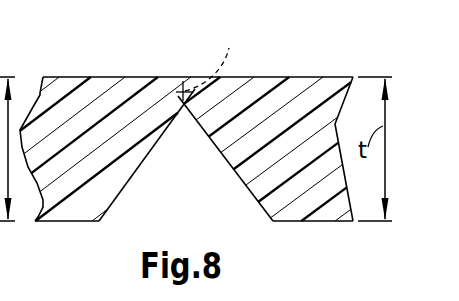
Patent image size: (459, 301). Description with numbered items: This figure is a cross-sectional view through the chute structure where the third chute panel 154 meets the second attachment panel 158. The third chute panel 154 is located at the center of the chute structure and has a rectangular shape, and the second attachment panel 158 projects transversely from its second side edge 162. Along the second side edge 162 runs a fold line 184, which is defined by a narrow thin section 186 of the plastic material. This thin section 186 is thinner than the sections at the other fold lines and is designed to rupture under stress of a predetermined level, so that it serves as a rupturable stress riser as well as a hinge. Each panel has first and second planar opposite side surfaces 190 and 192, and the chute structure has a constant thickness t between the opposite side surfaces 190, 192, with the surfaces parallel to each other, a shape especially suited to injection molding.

The third chute panel 154 is at (103, 65).
The second attachment panel 158 is at (271, 64).
The second side edge 162 is at (221, 60).
The fold line 184 is at (185, 91).
The thin section 186 is at (165, 103).
The first side surface 190 is at (83, 77).
The second side surface 192 is at (83, 221).